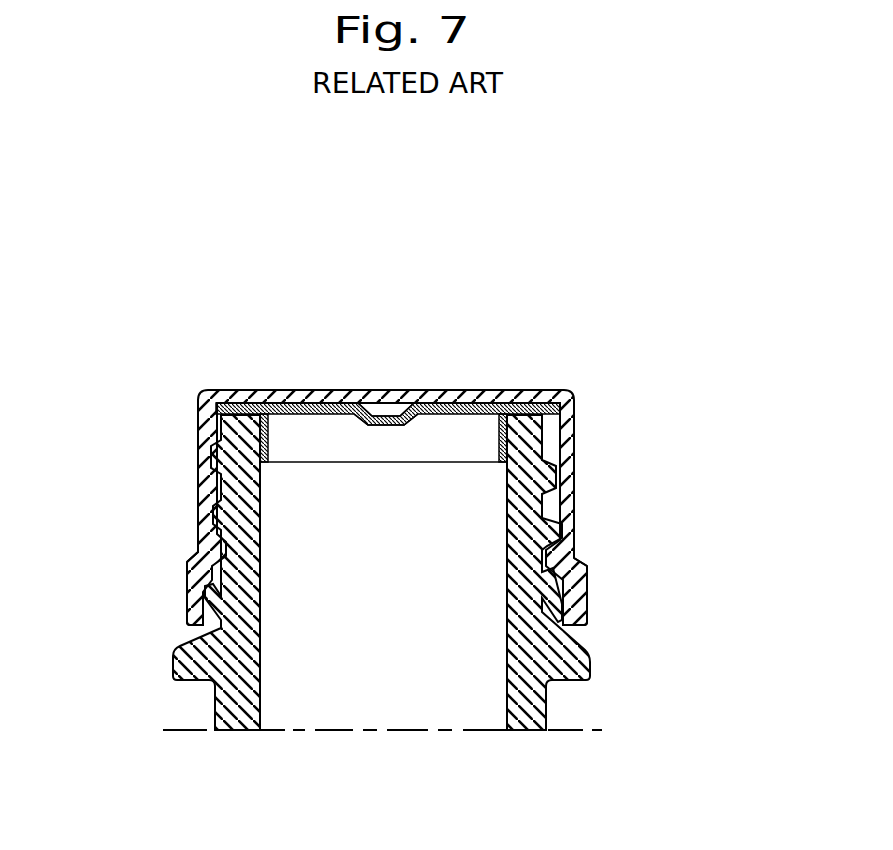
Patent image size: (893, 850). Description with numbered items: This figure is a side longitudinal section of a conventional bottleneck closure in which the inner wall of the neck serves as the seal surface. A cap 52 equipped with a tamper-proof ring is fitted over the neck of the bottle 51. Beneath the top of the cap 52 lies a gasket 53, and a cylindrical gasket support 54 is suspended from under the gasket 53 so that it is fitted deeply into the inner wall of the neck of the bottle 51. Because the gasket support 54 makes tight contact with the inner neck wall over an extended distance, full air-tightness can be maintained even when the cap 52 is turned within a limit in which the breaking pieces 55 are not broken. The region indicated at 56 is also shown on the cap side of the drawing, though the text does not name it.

The bottle 51 is at (602, 648).
The cap 52 is at (392, 389).
The gasket 53 is at (392, 430).
The gasket support 54 is at (270, 442).
The breaking pieces 55 is at (193, 563).
The thread portion of cap (right) 56 is at (588, 582).